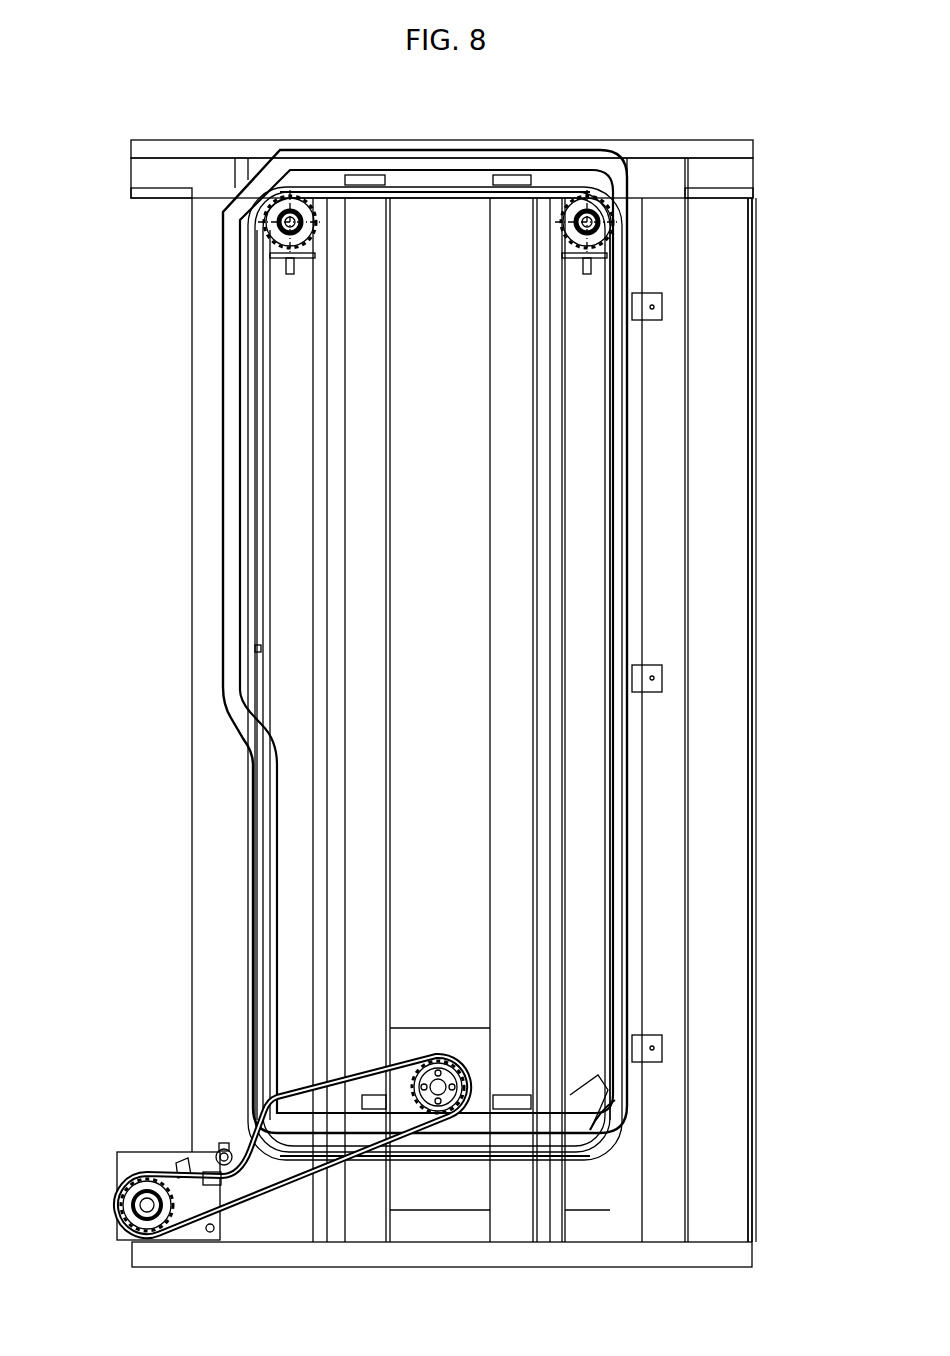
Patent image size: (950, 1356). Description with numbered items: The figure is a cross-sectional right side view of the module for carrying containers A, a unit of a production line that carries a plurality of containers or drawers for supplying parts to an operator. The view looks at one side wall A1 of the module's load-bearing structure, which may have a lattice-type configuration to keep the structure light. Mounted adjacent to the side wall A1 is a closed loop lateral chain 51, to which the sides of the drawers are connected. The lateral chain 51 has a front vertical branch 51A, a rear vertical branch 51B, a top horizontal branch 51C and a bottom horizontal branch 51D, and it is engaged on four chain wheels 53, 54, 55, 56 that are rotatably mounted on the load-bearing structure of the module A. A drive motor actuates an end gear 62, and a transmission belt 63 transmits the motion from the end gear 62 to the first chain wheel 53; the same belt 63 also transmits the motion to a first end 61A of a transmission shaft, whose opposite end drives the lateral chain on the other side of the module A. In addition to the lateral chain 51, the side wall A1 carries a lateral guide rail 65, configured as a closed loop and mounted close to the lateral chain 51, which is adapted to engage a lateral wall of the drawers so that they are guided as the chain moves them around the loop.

The module for carrying containers A is at (133, 110).
The side wall A1 is at (725, 300).
The lateral chain 51 is at (532, 192).
The front vertical branch 51A is at (255, 548).
The rear vertical branch 51B is at (620, 555).
The top horizontal branch 51C is at (357, 190).
The bottom horizontal branch 51D is at (420, 1157).
The first chain wheel 53 is at (250, 1152).
The chain wheel 54 is at (592, 1140).
The chain wheel 55 is at (570, 230).
The chain wheel 56 is at (312, 236).
The first end of the transmission shaft 61A is at (438, 1070).
The end gear 62 is at (167, 1195).
The transmission belt 63 is at (283, 1180).
The lateral guide rail 65 is at (455, 158).